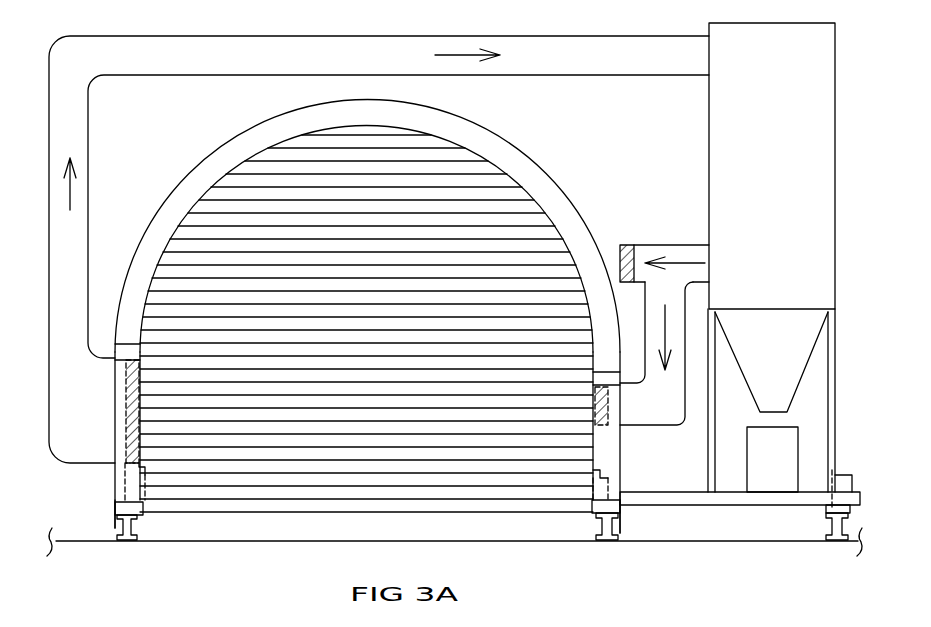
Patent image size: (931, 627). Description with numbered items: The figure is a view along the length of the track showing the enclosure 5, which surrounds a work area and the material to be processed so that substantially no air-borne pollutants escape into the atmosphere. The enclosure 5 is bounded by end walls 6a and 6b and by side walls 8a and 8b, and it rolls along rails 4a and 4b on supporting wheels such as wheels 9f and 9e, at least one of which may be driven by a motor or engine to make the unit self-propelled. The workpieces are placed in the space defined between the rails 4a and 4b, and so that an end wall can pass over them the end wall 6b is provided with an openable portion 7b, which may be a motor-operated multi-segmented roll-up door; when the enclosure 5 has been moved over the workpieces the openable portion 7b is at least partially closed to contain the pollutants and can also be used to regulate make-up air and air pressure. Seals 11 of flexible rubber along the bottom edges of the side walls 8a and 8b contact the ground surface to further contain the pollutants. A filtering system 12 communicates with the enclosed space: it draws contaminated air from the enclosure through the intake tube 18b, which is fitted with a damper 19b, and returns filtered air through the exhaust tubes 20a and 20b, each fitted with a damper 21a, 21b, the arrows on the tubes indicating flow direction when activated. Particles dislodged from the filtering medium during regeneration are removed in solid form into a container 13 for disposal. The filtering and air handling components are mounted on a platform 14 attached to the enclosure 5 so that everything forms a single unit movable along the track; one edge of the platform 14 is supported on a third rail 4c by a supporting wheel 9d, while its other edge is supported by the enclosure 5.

The enclosure 5 is at (230, 578).
The filter system intake tube 18b is at (591, 70).
The damper 19b is at (120, 435).
The openable portion 7b is at (564, 195).
The end wall 6a is at (127, 345).
The end wall 6b is at (606, 367).
The damper 21a is at (628, 245).
The damper 21b is at (604, 426).
The side wall 8a is at (142, 468).
The side wall 8b is at (592, 463).
The supporting wheel 9f is at (143, 514).
The supporting wheel 9e is at (592, 514).
The supporting wheel 9d is at (830, 512).
The rail 4a is at (125, 543).
The rail 4b is at (604, 543).
The rail 4c is at (835, 544).
The seal 11 is at (115, 514).
The platform 14 is at (708, 497).
The filtering system 12 is at (786, 165).
The container 13 is at (783, 476).
The filter system exhaust tube 20a is at (660, 252).
The filter system exhaust tube 20b is at (675, 413).